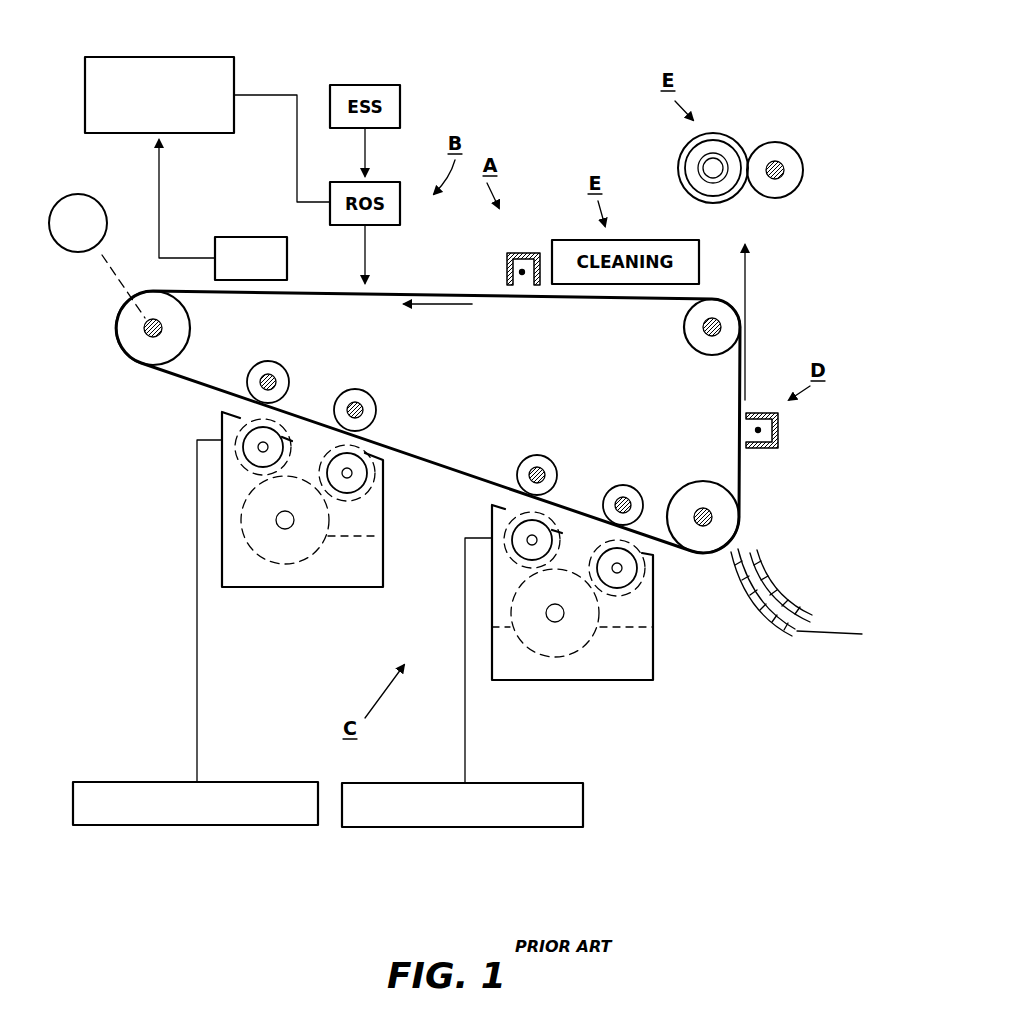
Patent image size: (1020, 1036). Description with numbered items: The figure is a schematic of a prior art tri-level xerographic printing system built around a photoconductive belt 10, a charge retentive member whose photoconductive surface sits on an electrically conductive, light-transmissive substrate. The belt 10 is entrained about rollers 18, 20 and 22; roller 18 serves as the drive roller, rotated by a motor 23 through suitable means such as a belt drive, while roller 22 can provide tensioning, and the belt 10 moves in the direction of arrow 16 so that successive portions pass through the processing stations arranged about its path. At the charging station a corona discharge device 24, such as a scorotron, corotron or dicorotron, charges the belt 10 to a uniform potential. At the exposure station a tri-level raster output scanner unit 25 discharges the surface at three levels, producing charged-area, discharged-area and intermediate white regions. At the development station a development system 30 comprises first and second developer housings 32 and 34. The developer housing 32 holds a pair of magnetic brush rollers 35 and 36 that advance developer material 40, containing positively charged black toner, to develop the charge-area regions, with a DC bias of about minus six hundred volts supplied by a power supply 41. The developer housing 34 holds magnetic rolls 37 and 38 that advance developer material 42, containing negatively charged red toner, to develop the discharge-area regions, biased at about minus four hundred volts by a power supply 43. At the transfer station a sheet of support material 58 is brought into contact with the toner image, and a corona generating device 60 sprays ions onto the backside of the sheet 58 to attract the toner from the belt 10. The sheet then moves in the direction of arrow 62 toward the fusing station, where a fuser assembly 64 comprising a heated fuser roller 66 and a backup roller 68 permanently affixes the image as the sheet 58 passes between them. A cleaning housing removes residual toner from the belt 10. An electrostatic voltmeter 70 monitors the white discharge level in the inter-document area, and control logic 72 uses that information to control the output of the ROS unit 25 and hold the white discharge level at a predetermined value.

The photoconductive belt 10 is at (745, 376).
The arrow 16 is at (440, 306).
The roller 18 is at (180, 328).
The roller 20 is at (692, 490).
The roller 22 is at (698, 344).
The motor 23 is at (93, 204).
The corona discharge device 24 is at (521, 253).
The raster output scanner unit 25 is at (392, 219).
The development system 30 is at (182, 578).
The developer housing 32 is at (300, 590).
The developer housing 34 is at (600, 682).
The magnetic brush roller 35 is at (268, 424).
The magnetic brush roller 36 is at (365, 459).
The magnetic roll 37 is at (528, 528).
The magnetic roll 38 is at (612, 548).
The developer material 40 is at (240, 535).
The power supply 41 is at (152, 826).
The developer material 42 is at (655, 617).
The power supply 43 is at (551, 827).
The sheet of support material 58 is at (822, 637).
The corona generating device 60 is at (780, 439).
The arrow 62 is at (750, 294).
The fuser assembly 64 is at (756, 162).
The fuser roller 66 is at (722, 144).
The backup roller 68 is at (790, 151).
The electrostatic voltmeter 70 is at (242, 237).
The control logic 72 is at (208, 66).